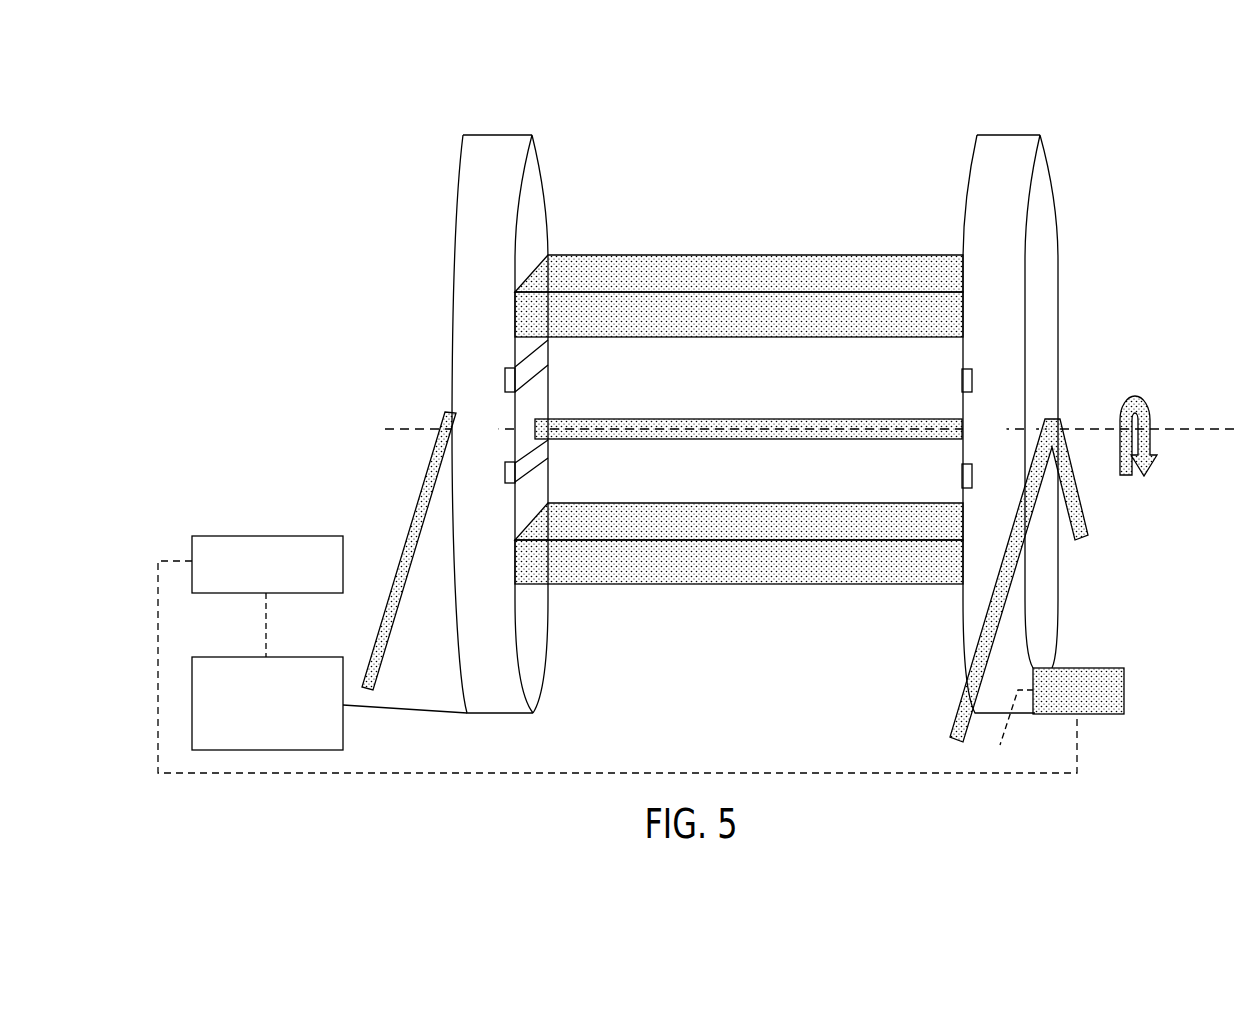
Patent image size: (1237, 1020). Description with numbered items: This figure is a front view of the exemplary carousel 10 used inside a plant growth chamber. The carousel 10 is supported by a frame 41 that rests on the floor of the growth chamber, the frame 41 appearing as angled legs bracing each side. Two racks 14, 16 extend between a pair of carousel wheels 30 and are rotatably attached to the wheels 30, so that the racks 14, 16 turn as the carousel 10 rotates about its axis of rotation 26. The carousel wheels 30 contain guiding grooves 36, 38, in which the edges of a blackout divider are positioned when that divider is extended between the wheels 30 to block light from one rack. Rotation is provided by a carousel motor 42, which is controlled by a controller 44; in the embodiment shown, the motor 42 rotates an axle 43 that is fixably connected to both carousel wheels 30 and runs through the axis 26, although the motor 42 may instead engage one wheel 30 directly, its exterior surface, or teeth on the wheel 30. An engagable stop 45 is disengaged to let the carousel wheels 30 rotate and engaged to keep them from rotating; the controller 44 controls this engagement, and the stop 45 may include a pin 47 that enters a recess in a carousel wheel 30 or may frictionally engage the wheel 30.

The carousel 10 is at (1049, 80).
The rack 14 is at (751, 255).
The rack 16 is at (750, 503).
The axis of rotation 26 is at (1207, 428).
The carousel wheel 30 is at (457, 195).
The guiding groove 36 is at (552, 348).
The guiding groove 38 is at (552, 450).
The frame 41 is at (413, 516).
The carousel motor 42 is at (329, 703).
The axle 43 is at (677, 419).
The controller 44 is at (617, 654).
The engagable stop 45 is at (1107, 668).
The pin 47 is at (1008, 730).